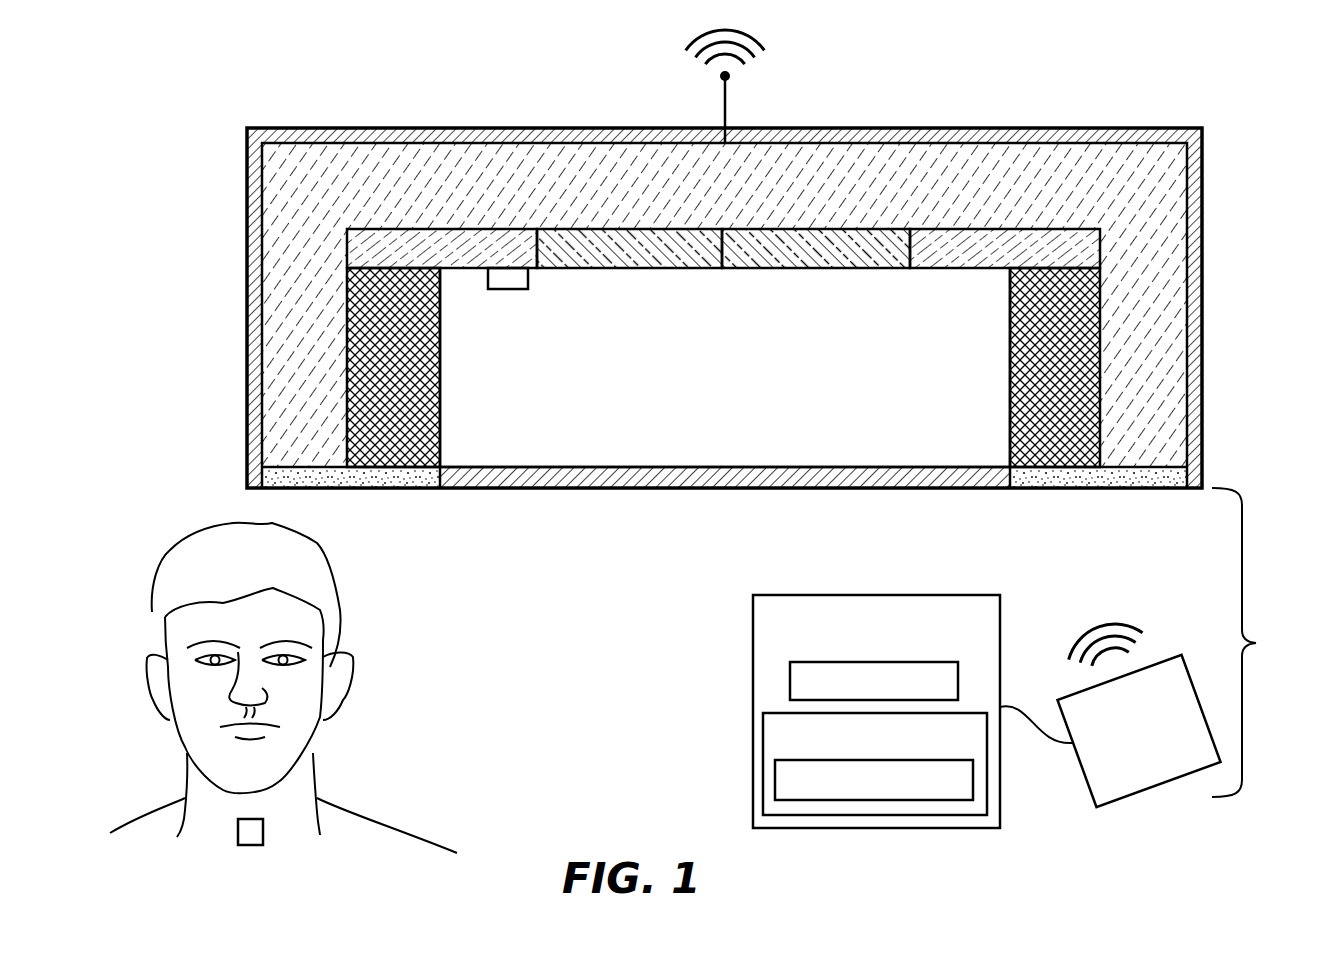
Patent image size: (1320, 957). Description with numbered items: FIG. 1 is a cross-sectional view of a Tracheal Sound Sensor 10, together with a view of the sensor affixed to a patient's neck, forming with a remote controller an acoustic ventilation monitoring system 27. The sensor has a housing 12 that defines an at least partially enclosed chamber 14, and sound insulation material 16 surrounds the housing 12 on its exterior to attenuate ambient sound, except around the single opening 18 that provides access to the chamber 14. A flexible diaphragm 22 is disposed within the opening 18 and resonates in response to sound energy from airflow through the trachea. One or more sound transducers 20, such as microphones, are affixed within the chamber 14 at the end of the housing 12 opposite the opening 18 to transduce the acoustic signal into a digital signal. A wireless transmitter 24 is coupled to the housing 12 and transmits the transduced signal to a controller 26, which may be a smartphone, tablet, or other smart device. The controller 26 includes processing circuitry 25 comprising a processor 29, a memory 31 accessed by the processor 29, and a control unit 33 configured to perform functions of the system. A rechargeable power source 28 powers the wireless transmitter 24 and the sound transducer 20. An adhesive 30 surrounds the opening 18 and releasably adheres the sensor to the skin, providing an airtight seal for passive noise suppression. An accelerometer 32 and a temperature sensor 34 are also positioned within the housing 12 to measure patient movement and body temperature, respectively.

The Tracheal Sound Sensor 10 is at (680, 437).
The housing 12 is at (408, 175).
The chamber 14 is at (725, 367).
The sound insulation material 16 is at (528, 142).
The opening 18 is at (723, 417).
The sound transducer 20 is at (622, 250).
The flexible diaphragm 22 is at (553, 490).
The wireless transmitter 24 is at (731, 112).
The processing circuitry 25 is at (876, 711).
The controller 26 is at (1138, 711).
The acoustic ventilation monitoring system 27 is at (1252, 642).
The rechargeable power source 28 is at (525, 320).
The processor 29 is at (875, 764).
The adhesive 30 is at (402, 490).
The memory 31 is at (874, 681).
The accelerometer 32 is at (453, 270).
The control unit 33 is at (874, 780).
The temperature sensor 34 is at (398, 432).